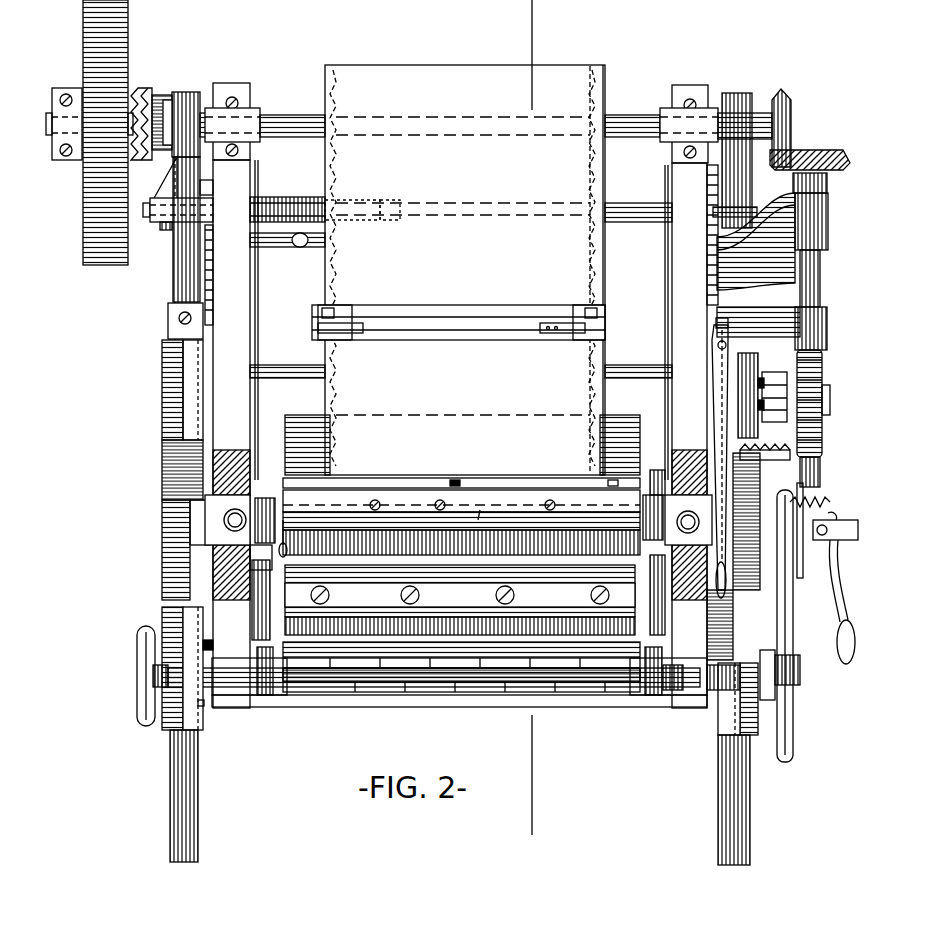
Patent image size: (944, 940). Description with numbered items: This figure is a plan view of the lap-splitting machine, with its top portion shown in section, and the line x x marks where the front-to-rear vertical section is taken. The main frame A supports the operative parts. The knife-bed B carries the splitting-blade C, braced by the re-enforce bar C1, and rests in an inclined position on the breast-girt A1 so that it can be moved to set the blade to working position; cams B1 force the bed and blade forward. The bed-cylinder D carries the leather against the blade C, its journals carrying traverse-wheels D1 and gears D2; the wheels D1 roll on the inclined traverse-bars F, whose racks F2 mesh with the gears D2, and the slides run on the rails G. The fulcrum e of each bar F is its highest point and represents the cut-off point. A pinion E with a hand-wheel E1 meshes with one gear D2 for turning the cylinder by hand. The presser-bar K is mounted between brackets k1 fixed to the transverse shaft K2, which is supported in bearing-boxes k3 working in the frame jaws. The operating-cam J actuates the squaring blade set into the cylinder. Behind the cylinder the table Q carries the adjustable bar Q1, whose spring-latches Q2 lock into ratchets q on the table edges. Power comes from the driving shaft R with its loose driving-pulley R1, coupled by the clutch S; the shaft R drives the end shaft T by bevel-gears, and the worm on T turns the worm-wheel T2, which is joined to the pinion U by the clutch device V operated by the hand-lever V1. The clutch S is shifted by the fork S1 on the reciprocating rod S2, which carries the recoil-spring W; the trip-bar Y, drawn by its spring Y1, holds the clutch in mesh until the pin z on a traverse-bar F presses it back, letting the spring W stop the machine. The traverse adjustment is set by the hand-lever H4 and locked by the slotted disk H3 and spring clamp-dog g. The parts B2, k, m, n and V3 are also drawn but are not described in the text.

The section line x is at (541, 417).
The driving-pulley R1 is at (105, 149).
The driving shaft R is at (409, 123).
The clutch S is at (165, 112).
The fork S1 is at (159, 178).
The reciprocating rod S2 is at (395, 204).
The trip-bar Y is at (212, 188).
The trip-bar spring Y1 is at (205, 295).
The recoil-spring W is at (325, 212).
The main frame A is at (460, 434).
The table Q is at (465, 270).
The ratchets q is at (600, 275).
The adjustable bar Q1 is at (458, 322).
The spring-latches Q2 is at (464, 323).
The bed-cylinder D is at (462, 446).
The presser-bar K is at (461, 496).
The transverse shaft K2 is at (480, 506).
The splitting-blade C is at (461, 535).
The re-enforce bar C1 is at (460, 600).
The knife-bed B is at (461, 667).
The breast-girt A1 is at (440, 707).
The cams B1 is at (265, 695).
The hand wheel B2 is at (655, 712).
The racks F2 is at (166, 385).
The gears D2 is at (165, 455).
The traverse-wheels D1 is at (186, 550).
The traverse-bars F is at (451, 671).
The spring k is at (252, 592).
The pin z is at (212, 648).
The fulcrum e is at (204, 706).
The brackets k1 is at (270, 495).
The bearing m is at (227, 520).
The bearing-boxes k3 is at (688, 522).
The operating-cam J is at (657, 477).
The spring n is at (690, 595).
The rails G is at (463, 470).
The end shaft T is at (783, 288).
The worm-wheel T2 is at (824, 403).
The pinion U is at (756, 394).
The clutch device V is at (772, 411).
The hand-lever V1 is at (727, 458).
The rack V3 is at (790, 458).
The pinion E is at (753, 645).
The hand-wheel E1 is at (791, 688).
The slotted disk H3 is at (806, 535).
The spring clamp-dog g is at (813, 489).
The hand-lever H4 is at (839, 588).